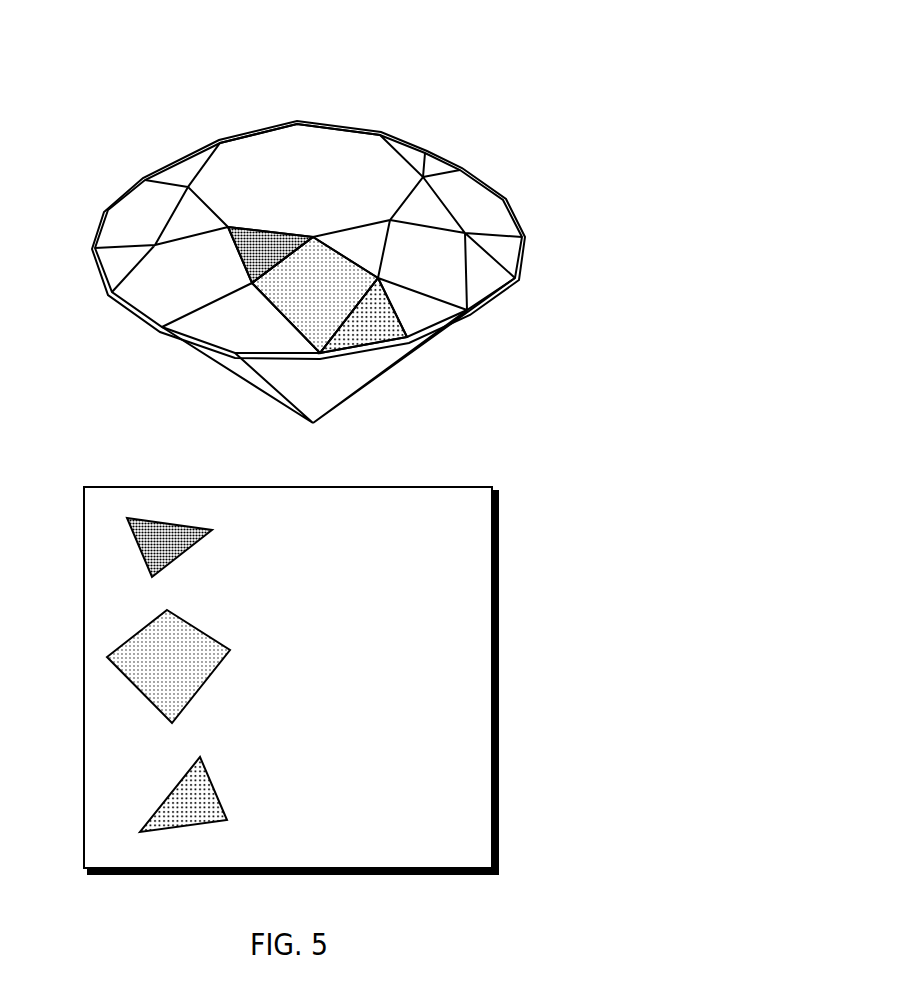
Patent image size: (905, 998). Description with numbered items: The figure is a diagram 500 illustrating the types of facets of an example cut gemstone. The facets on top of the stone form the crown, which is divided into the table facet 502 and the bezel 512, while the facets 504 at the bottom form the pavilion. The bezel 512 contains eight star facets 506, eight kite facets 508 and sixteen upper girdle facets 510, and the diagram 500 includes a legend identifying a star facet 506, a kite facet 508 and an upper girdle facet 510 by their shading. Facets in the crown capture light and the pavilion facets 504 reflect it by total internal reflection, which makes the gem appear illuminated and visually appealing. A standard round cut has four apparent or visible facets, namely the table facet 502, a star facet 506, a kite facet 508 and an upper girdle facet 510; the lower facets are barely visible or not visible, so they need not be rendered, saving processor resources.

The diagram 500 is at (480, 70).
The table facet 502 is at (268, 143).
The pavilion facets 504 is at (350, 400).
The star facets 506 is at (133, 548).
The kite facets 508 is at (123, 677).
The upper girdle facets 510 is at (165, 800).
The bezel 512 is at (218, 318).